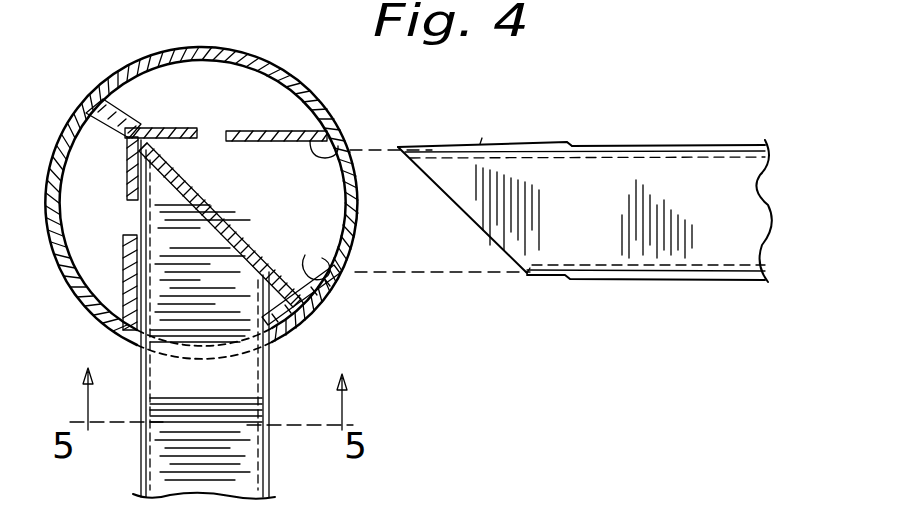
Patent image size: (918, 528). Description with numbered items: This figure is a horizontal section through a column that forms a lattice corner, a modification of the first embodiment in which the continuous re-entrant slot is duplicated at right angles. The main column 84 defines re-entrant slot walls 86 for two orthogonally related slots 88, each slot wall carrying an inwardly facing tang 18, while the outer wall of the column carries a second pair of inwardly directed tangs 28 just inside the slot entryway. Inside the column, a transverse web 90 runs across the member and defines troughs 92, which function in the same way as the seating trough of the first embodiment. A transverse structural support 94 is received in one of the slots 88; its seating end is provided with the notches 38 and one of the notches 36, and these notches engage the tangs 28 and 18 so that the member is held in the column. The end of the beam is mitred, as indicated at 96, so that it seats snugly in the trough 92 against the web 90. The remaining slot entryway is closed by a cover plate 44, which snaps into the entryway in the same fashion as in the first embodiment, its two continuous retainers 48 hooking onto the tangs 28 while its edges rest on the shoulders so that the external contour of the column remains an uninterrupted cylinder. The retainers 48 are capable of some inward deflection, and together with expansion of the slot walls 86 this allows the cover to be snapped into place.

The inwardly facing tang 18 is at (234, 144).
The inwardly directed tang 28 is at (345, 152).
The notch 36 is at (481, 142).
The notch 38 is at (571, 146).
The cover plate 44 is at (355, 236).
The continuous retainer 48 is at (304, 258).
The main column 84 is at (120, 72).
The re-entrant slot wall 86 is at (256, 143).
The slot 88 is at (340, 206).
The transverse web 90 is at (238, 233).
The trough 92 is at (192, 138).
The transverse structural support 94 is at (754, 186).
The mitred end 96 is at (488, 243).